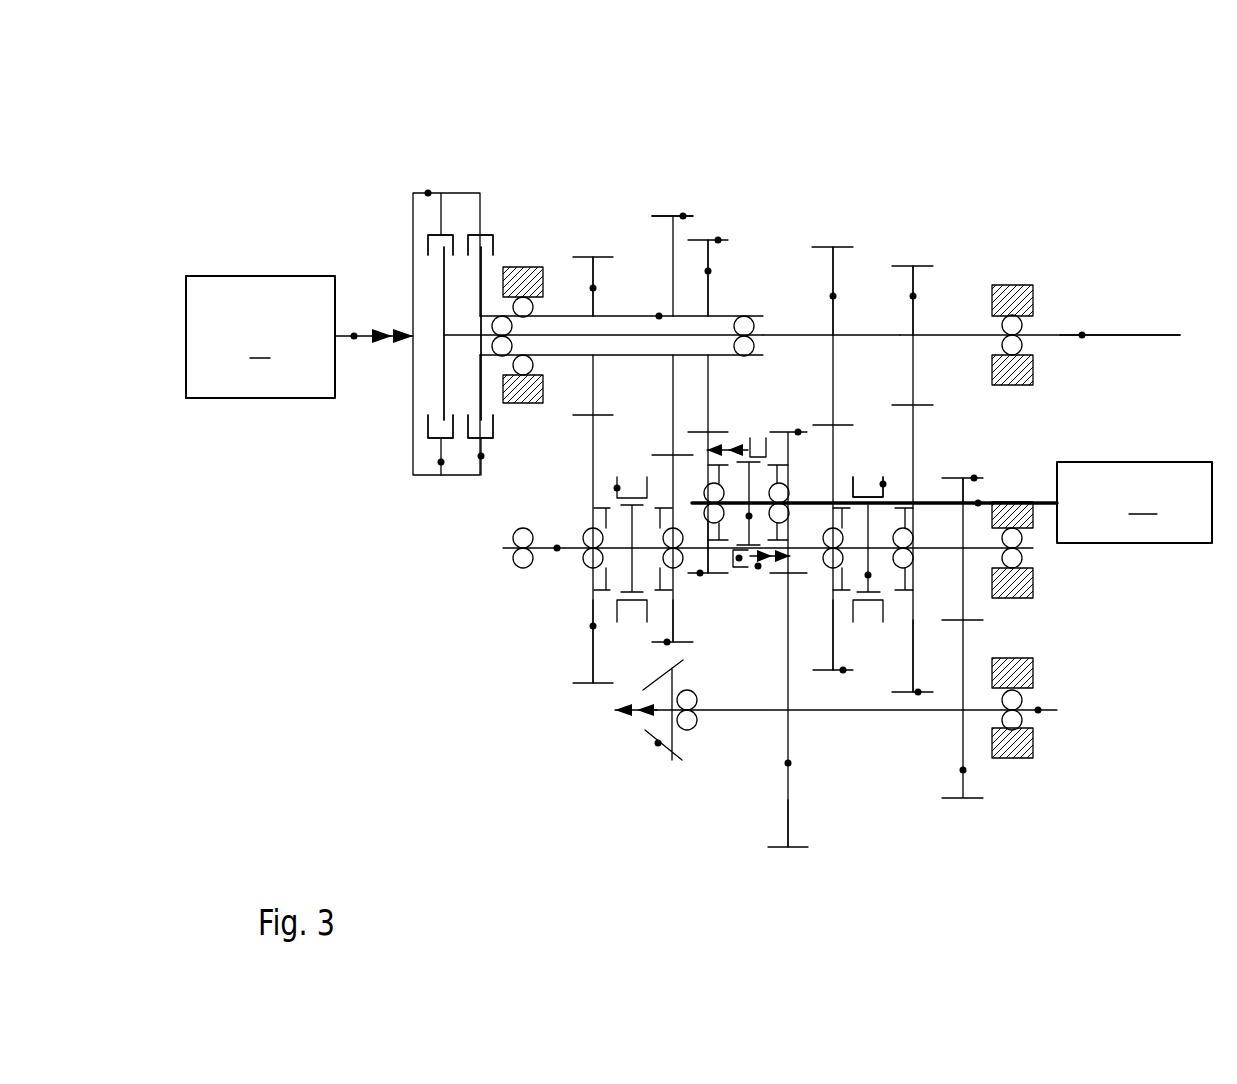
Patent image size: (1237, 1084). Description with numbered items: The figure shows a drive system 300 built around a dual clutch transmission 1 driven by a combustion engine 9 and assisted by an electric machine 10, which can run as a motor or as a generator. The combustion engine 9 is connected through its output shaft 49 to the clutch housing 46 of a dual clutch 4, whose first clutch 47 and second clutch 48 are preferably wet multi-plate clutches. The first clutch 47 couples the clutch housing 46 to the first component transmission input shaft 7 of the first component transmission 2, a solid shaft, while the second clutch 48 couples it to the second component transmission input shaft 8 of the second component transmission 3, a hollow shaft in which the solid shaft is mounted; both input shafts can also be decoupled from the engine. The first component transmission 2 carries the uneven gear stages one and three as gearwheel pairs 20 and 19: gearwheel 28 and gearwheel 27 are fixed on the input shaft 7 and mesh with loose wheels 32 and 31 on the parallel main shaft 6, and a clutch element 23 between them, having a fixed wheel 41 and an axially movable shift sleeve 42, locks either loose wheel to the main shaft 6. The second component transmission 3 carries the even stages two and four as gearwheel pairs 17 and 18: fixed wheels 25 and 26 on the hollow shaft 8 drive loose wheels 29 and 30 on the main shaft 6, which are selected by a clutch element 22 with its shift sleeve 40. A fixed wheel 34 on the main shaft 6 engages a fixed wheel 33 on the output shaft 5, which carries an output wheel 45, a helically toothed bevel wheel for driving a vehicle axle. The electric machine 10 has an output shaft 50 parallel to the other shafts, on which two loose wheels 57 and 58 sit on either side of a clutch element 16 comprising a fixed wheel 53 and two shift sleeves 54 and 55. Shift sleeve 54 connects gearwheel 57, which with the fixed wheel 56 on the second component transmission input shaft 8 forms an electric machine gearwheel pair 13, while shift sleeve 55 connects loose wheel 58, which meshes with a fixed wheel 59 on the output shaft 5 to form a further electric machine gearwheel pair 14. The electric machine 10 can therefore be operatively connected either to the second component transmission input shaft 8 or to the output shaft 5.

The drive system 300 is at (298, 161).
The combustion engine 9 is at (260, 337).
The electric machine 10 is at (1134, 502).
The output shaft 49 is at (354, 336).
The clutch housing 46 is at (428, 193).
The dual clutch 4 is at (424, 495).
The first clutch 47 is at (441, 462).
The second clutch 48 is at (481, 456).
The second component transmission 3 is at (625, 292).
The second component transmission input shaft 8 is at (659, 316).
The dual clutch transmission 1 is at (791, 192).
The first component transmission 2 is at (973, 302).
The first component transmission input shaft 7 is at (1082, 335).
The gearwheel pair 17 is at (586, 236).
The gearwheel 25 is at (593, 288).
The gearwheel 29 is at (593, 626).
The shift sleeve 40 is at (617, 488).
The clutch element 22 is at (621, 630).
The gearwheel pair 18 is at (668, 200).
The gearwheel 26 is at (683, 216).
The gearwheel 30 is at (667, 642).
The main shaft 6 is at (557, 548).
The fixed wheel 56 is at (718, 240).
The electric machine gearwheel pair 13 is at (708, 271).
The loose wheel 57 is at (700, 573).
The output shaft 50 is at (978, 503).
The clutch element 16 is at (752, 417).
The fixed wheel 53 is at (749, 516).
The shift sleeve 54 is at (739, 558).
The shift sleeve 55 is at (758, 566).
The loose wheel 58 is at (798, 432).
The fixed wheel 59 is at (788, 763).
The electric machine gearwheel pair 14 is at (765, 866).
The gearwheel pair 19 is at (834, 231).
The gearwheel 27 is at (833, 296).
The gearwheel 32 is at (843, 670).
The clutch element 23 is at (871, 457).
The shift sleeve 42 is at (883, 484).
The fixed wheel 41 is at (868, 575).
The gearwheel pair 20 is at (916, 250).
The gearwheel 28 is at (913, 296).
The gearwheel 31 is at (918, 692).
The fixed wheel 34 is at (974, 478).
The fixed wheel 33 is at (963, 770).
The output shaft 5 is at (1038, 710).
The output wheel 45 is at (658, 743).